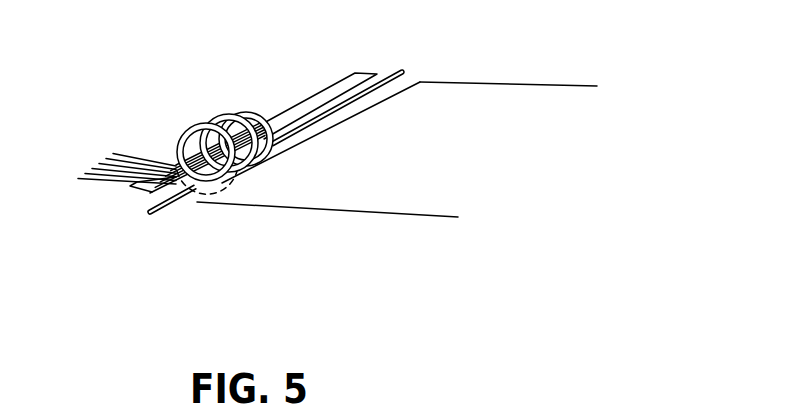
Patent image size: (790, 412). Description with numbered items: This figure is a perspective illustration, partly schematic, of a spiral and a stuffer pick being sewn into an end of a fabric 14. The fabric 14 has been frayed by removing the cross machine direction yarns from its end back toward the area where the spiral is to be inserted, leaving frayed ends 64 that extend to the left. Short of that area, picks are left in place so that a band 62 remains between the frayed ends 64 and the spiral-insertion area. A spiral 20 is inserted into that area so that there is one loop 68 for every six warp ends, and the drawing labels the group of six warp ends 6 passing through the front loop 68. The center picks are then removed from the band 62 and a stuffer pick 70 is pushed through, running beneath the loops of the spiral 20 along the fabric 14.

The fabric 14 is at (402, 195).
The spiral 20 is at (219, 115).
The band 62 is at (137, 189).
The frayed ends 64 is at (127, 155).
The loop 68 is at (187, 132).
The stuffer pick 70 is at (400, 70).
The six warp ends 6 is at (194, 186).